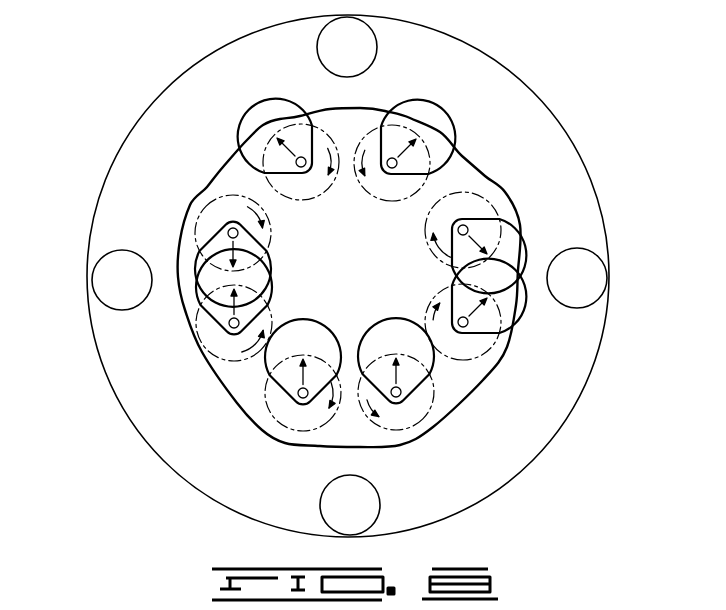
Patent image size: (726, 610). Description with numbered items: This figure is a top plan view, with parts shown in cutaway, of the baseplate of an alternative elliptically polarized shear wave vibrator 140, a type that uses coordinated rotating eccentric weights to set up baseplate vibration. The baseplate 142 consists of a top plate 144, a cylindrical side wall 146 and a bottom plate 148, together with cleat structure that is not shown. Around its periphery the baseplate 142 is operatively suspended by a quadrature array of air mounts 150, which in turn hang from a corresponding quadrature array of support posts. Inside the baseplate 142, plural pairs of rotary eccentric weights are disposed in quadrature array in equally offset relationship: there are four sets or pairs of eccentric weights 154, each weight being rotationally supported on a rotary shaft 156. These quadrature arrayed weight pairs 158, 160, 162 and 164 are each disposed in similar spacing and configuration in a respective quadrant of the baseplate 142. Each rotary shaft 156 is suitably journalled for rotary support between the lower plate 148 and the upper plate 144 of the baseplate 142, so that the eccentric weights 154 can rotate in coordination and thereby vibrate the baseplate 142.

The elliptically polarized shear wave vibrator 140 is at (543, 90).
The baseplate 142 is at (572, 200).
The top plate 144 is at (453, 55).
The cylindrical side wall 146 is at (607, 317).
The bottom plate 148 is at (448, 177).
The air mounts 150 is at (352, 57).
The eccentric weights 154 is at (397, 133).
The rotary shafts 156 is at (463, 229).
The weight pair 158 is at (362, 217).
The weight pair 160 is at (516, 287).
The weight pair 162 is at (364, 441).
The weight pair 164 is at (220, 290).